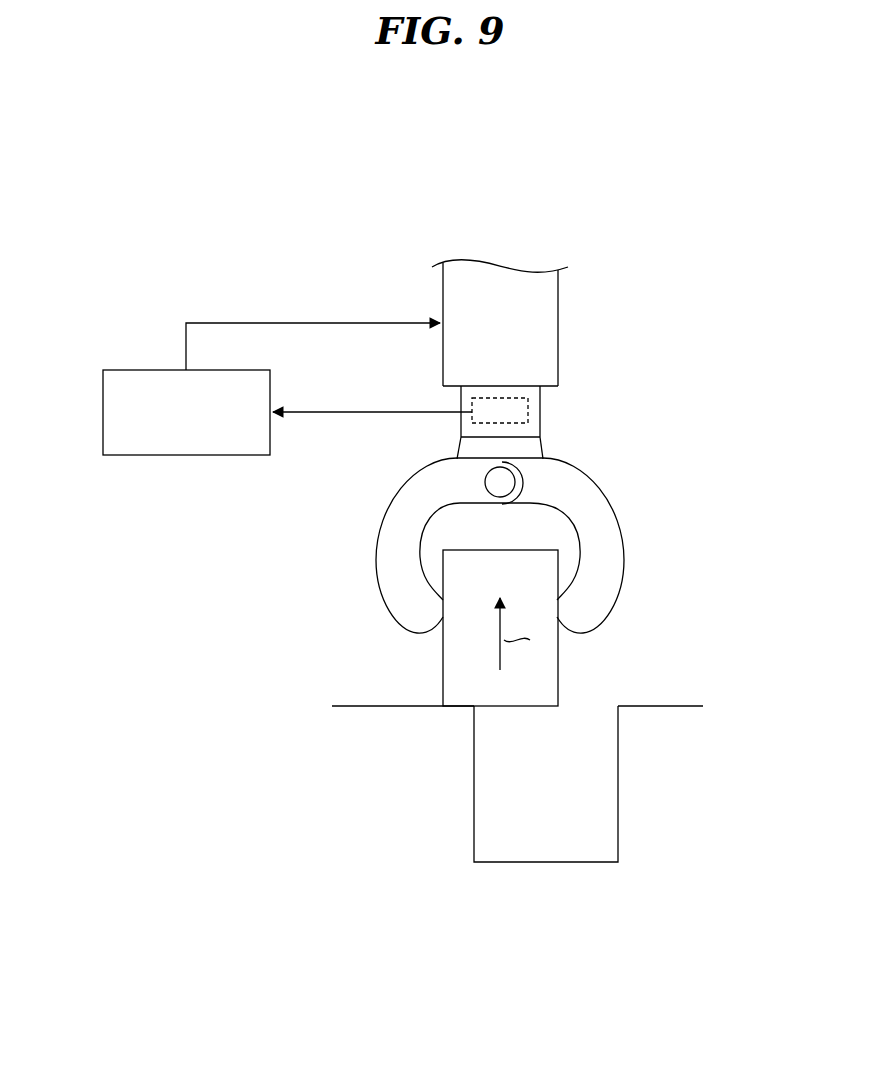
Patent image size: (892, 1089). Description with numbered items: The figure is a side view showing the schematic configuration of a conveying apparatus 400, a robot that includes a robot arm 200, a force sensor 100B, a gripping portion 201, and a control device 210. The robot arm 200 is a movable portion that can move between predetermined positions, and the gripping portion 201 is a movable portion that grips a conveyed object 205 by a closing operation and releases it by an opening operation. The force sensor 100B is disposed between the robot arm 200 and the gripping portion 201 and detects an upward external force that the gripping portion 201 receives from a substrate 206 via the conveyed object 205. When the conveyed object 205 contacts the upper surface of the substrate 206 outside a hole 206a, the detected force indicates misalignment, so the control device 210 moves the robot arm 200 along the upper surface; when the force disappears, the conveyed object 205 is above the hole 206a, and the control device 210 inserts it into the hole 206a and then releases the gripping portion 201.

The conveying apparatus 400 is at (478, 208).
The robot arm 200 is at (558, 310).
The force sensor 100B is at (545, 413).
The gripping portion 201 is at (612, 543).
The conveyed object 205 is at (550, 663).
The substrate 206 is at (551, 758).
The hole 206a is at (618, 766).
The control device 210 is at (150, 370).